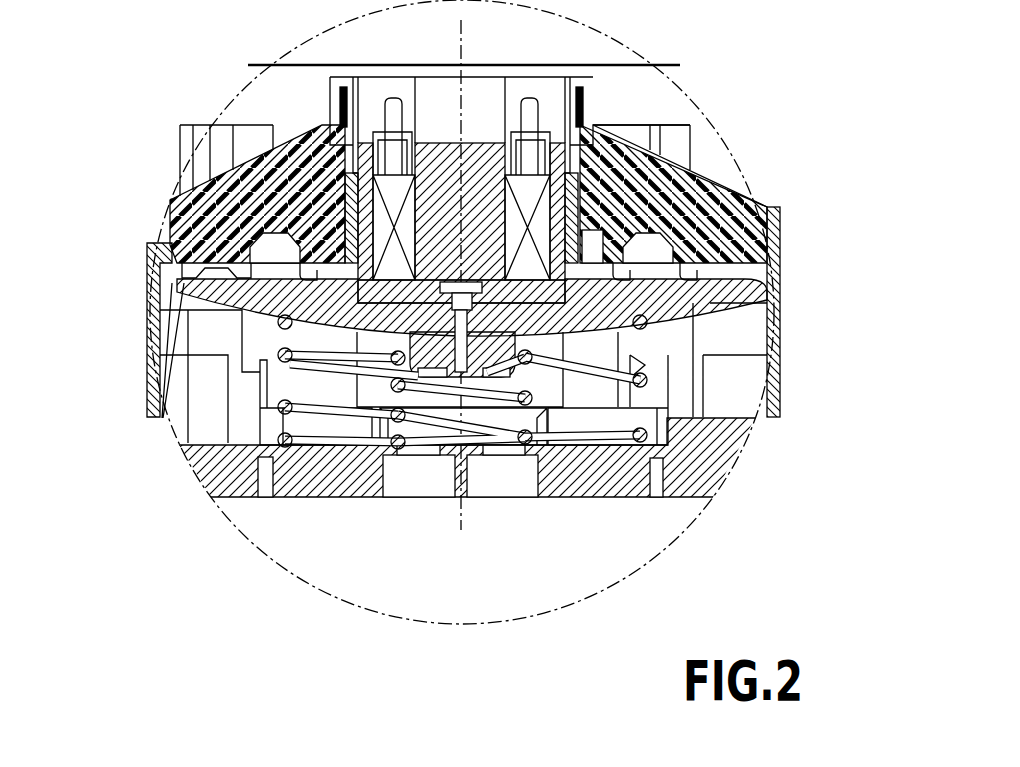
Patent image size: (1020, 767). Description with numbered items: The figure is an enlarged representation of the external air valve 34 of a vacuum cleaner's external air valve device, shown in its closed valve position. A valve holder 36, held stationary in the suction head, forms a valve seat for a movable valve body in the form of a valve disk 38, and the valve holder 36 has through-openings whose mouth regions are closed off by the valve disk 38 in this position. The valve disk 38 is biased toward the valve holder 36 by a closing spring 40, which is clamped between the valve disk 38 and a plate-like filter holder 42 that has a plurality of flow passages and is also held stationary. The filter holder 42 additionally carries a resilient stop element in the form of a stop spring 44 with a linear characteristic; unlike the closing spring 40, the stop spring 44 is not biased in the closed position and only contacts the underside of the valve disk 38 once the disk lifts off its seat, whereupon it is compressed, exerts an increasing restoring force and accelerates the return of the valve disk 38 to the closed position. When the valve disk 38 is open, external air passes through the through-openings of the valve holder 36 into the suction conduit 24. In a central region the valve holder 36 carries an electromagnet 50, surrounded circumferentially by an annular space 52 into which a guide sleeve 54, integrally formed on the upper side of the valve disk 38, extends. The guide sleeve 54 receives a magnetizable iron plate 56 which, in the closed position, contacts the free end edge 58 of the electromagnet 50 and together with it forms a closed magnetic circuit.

The suction conduit 24 is at (210, 402).
The external air valve 34 is at (742, 165).
The valve holder 36 is at (745, 215).
The valve disk 38 is at (705, 308).
The closing spring 40 is at (628, 446).
The filter holder 42 is at (705, 473).
The stop spring 44 is at (405, 414).
The electromagnet 50 is at (528, 193).
The annular space 52 is at (237, 162).
The guide sleeve 54 is at (180, 195).
The iron plate 56 is at (262, 305).
The free end edge 58 is at (548, 300).